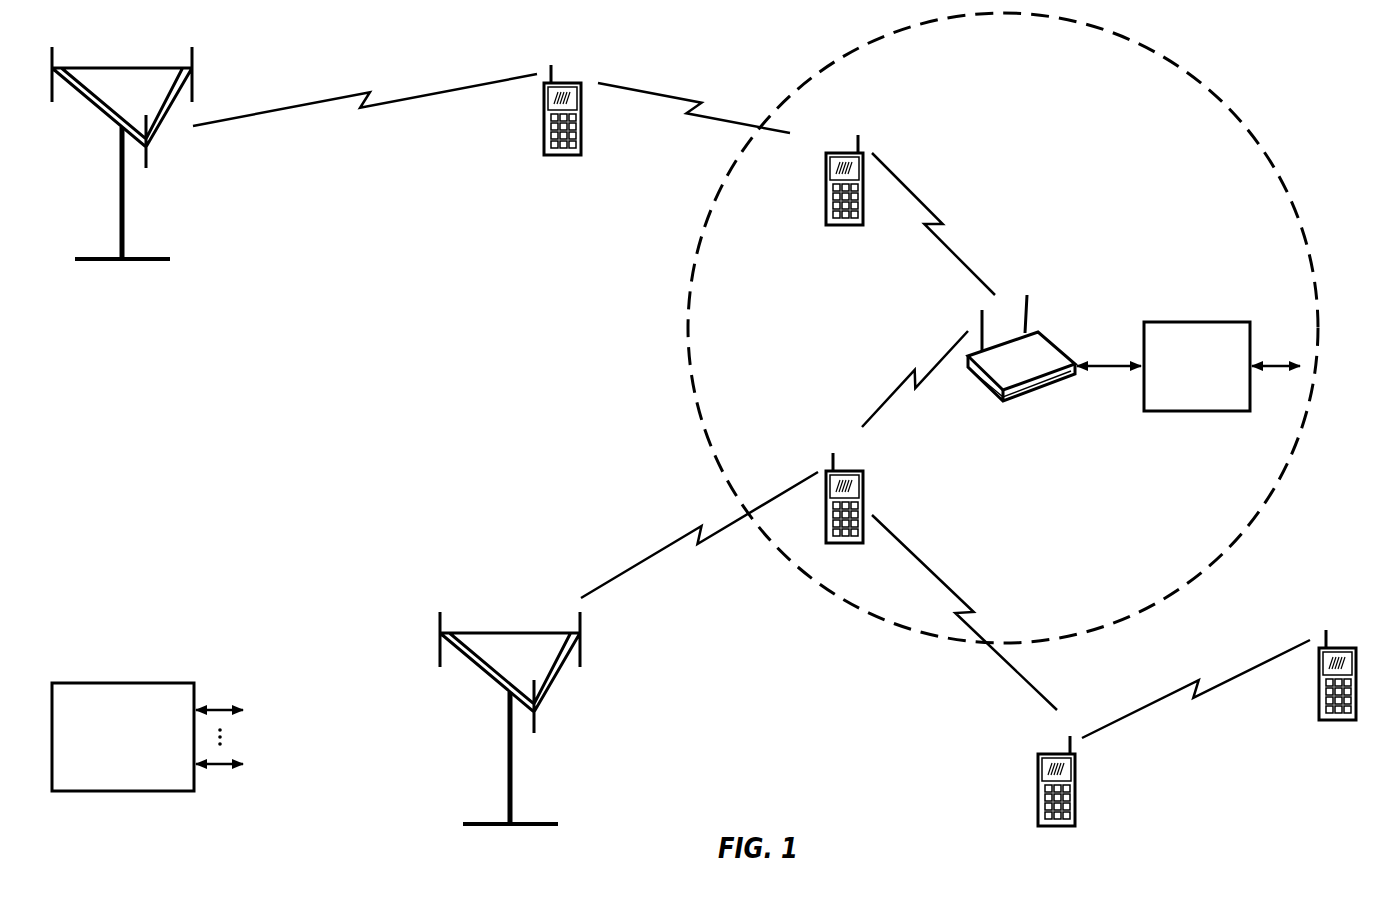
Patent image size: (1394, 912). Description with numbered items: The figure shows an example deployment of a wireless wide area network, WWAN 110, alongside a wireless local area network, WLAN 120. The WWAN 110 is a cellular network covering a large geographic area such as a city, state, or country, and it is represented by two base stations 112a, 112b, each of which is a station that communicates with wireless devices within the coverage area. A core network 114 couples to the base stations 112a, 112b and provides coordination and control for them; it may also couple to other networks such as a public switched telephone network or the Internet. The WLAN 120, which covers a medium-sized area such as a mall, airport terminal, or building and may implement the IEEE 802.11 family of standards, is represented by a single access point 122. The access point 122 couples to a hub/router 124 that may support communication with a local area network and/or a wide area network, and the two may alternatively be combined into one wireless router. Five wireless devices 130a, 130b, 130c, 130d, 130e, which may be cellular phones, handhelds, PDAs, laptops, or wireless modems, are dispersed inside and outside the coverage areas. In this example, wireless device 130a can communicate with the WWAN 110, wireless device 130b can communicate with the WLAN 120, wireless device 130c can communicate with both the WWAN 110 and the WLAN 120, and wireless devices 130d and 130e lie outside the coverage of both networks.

The WWAN 110 is at (247, 542).
The base station 112a is at (122, 68).
The base station 112b is at (505, 633).
The core network 114 is at (117, 683).
The WLAN 120 is at (1059, 208).
The access point 122 is at (1050, 338).
The hub/router 124 is at (1193, 322).
The wireless device 130a is at (563, 83).
The wireless device 130b is at (843, 153).
The wireless device 130c is at (846, 471).
The wireless device 130d is at (1052, 754).
The wireless device 130e is at (1338, 648).